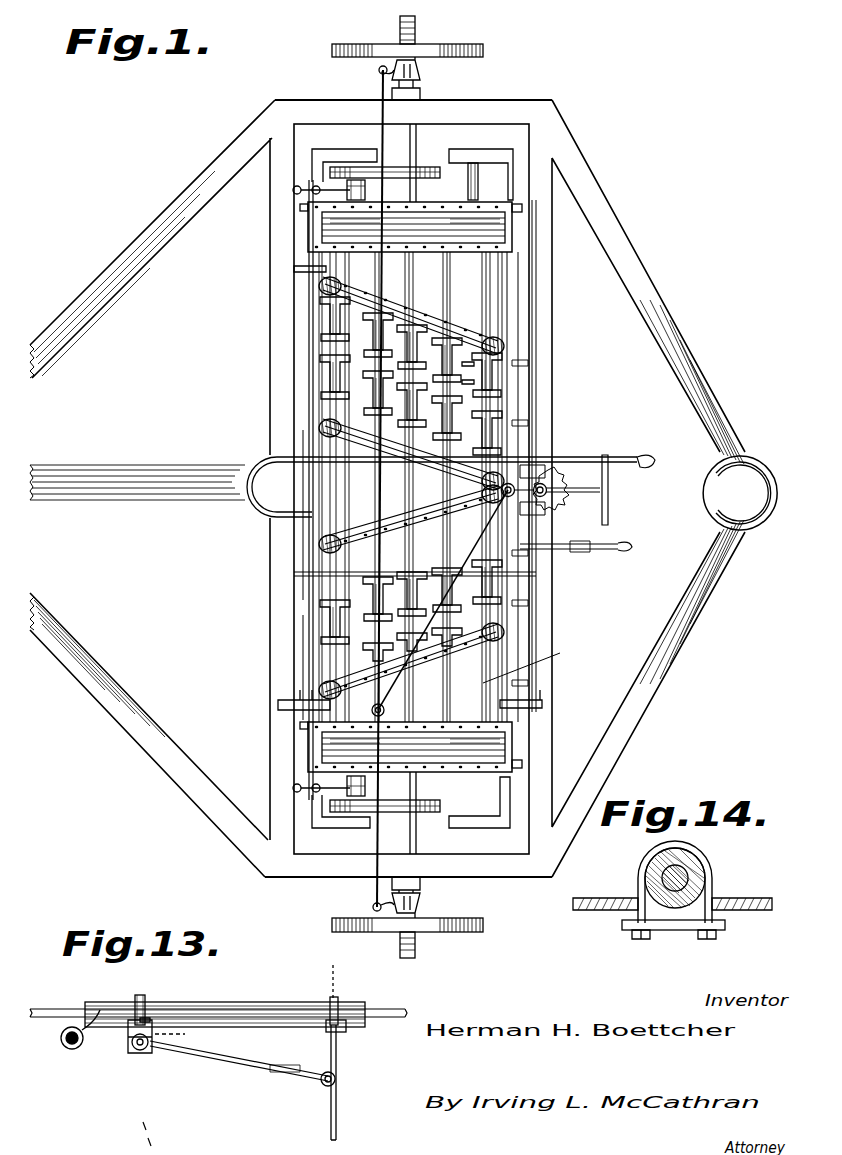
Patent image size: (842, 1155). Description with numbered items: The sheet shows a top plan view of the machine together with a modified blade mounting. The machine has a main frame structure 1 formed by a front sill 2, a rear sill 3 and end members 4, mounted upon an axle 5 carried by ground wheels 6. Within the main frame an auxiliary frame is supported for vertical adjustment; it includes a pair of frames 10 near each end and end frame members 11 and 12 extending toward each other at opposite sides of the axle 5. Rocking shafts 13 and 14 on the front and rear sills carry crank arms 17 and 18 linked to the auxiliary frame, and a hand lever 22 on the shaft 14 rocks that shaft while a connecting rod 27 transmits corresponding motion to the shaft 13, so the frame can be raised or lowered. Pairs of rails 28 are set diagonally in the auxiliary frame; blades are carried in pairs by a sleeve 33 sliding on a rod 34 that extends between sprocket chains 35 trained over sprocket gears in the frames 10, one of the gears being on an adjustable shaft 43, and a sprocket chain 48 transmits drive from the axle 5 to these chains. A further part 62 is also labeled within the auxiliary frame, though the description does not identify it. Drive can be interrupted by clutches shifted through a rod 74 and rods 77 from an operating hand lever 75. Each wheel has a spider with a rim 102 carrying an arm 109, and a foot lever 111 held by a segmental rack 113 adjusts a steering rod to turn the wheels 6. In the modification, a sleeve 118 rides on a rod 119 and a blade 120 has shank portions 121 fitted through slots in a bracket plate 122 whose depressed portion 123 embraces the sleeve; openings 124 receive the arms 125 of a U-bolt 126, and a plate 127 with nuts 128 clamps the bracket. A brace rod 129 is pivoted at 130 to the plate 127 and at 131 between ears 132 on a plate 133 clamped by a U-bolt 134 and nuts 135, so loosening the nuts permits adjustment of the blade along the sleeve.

In FIG. 1, the frame structure 1 is at (262, 434).
In FIG. 1, the front sill 2 is at (280, 213).
In FIG. 1, the rear sill 3 is at (548, 251).
In FIG. 1, the end members 4 is at (335, 877).
In FIG. 1, the axle 5 is at (422, 190).
In FIG. 1, the ground wheels 6 is at (450, 44).
In FIG. 1, the frames 10 is at (494, 206).
In FIG. 1, the end frame member 11 is at (352, 149).
In FIG. 1, the end frame member 12 is at (480, 149).
In FIG. 1, the shaft 13 is at (287, 345).
In FIG. 1, the shaft 14 is at (538, 330).
In FIG. 13, the shaft 14 is at (342, 979).
In FIG. 1, the crank arms 17 is at (305, 720).
In FIG. 1, the crank arms 18 is at (528, 710).
In FIG. 1, the hand lever 22 is at (595, 552).
In FIG. 1, the connecting rod 27 is at (356, 535).
In FIG. 1, the rails 28 is at (436, 298).
In FIG. 1, the sleeve 33 is at (373, 372).
In FIG. 1, the rod 34 is at (478, 603).
In FIG. 1, the sprocket chains 35 is at (418, 728).
In FIG. 1, the shaft 43 is at (474, 190).
In FIG. 1, the sprocket chain 48 is at (395, 170).
In FIG. 1, the guide 62 is at (475, 398).
In FIG. 1, the rod 74 is at (302, 607).
In FIG. 1, the operating hand lever 75 is at (248, 512).
In FIG. 1, the rods 77 is at (305, 268).
In FIG. 1, the rim 102 is at (422, 72).
In FIG. 1, the arm 109 is at (379, 72).
In FIG. 1, the foot lever 111 is at (612, 491).
In FIG. 1, the segmental rack 113 is at (562, 514).
In FIG. 13, the sleeve 118 is at (272, 1003).
In FIG. 14, the sleeve 118 is at (702, 872).
In FIG. 13, the rod 119 is at (52, 1008).
In FIG. 13, the blade 120 is at (340, 1117).
In FIG. 13, the shank portions 121 is at (348, 1033).
In FIG. 13, the bracket plate 122 is at (340, 1010).
In FIG. 14, the bracket plate 122 is at (592, 896).
In FIG. 14, the depressed portion 123 is at (726, 930).
In FIG. 14, the openings 124 is at (712, 896).
In FIG. 14, the arms 125 is at (643, 928).
In FIG. 14, the U-bolt 126 is at (700, 848).
In FIG. 14, the plate 127 is at (625, 925).
In FIG. 14, the nuts 128 is at (706, 942).
In FIG. 13, the brace rod 129 is at (220, 1062).
In FIG. 13, the pivotal connection 130 is at (326, 1088).
In FIG. 13, the pivotal mounting 131 is at (142, 1052).
In FIG. 13, the ears 132 is at (136, 1048).
In FIG. 13, the plate 133 is at (150, 1020).
In FIG. 13, the U-bolt 134 is at (128, 1002).
In FIG. 13, the nuts 135 is at (189, 1035).